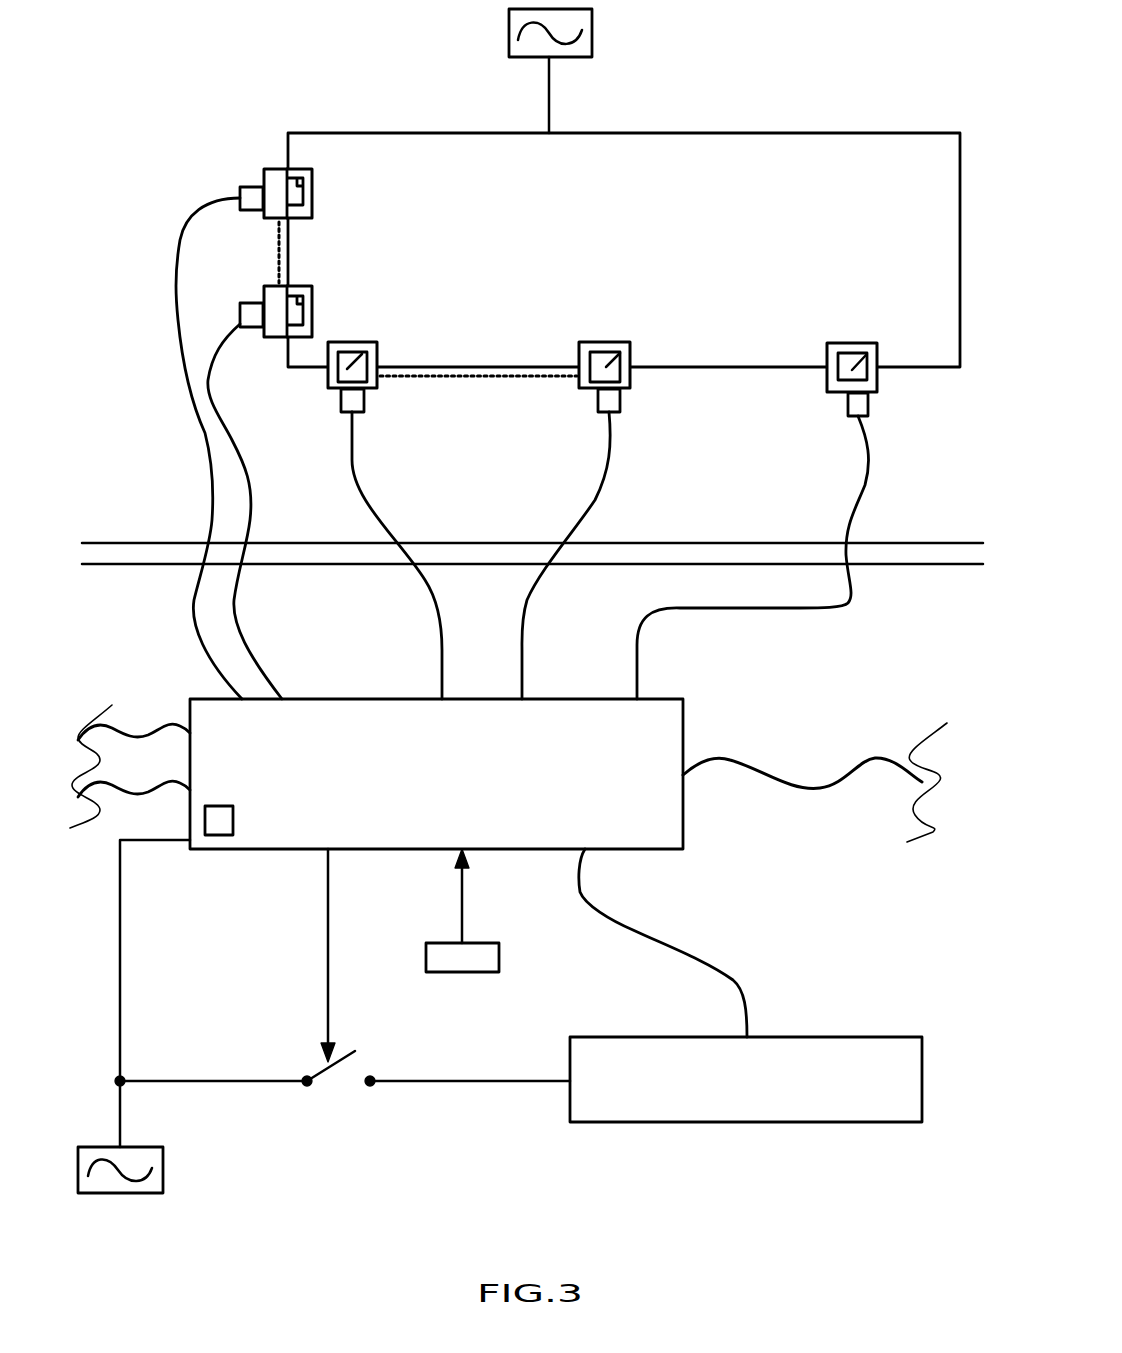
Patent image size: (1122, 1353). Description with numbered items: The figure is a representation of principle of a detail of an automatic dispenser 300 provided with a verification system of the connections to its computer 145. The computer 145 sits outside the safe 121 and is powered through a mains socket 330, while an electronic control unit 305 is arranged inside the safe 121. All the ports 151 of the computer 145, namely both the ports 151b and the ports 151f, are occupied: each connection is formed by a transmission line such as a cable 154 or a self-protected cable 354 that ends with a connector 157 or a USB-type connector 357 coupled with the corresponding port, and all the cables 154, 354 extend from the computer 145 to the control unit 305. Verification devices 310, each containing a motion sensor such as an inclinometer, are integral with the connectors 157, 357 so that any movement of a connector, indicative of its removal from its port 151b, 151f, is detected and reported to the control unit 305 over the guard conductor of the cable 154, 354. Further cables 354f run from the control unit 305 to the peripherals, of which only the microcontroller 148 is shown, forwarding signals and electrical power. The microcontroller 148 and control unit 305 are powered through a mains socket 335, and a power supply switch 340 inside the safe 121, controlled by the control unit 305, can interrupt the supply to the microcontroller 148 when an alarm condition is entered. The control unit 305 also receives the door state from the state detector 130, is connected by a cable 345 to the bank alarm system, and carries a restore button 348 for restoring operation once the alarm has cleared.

The automatic dispenser 300 is at (782, 88).
The mains socket 330 is at (592, 35).
The ports 151 is at (507, 233).
The computer 145 is at (748, 133).
The ports 151b is at (312, 195).
The ports 151f is at (355, 343).
The connector 157 is at (280, 180).
The connector 357 is at (363, 352).
The verification device 310 is at (253, 187).
The cable 154 is at (183, 352).
The cable 354 is at (358, 473).
The safe 121 is at (897, 545).
The control unit 305 is at (683, 742).
The restore button 348 is at (233, 822).
The cables 354f is at (173, 722).
The cable 345 is at (773, 770).
The state detector 130 is at (483, 943).
The power supply switch 340 is at (330, 1068).
The mains socket 335 is at (163, 1167).
The microcontroller 148 is at (777, 1122).